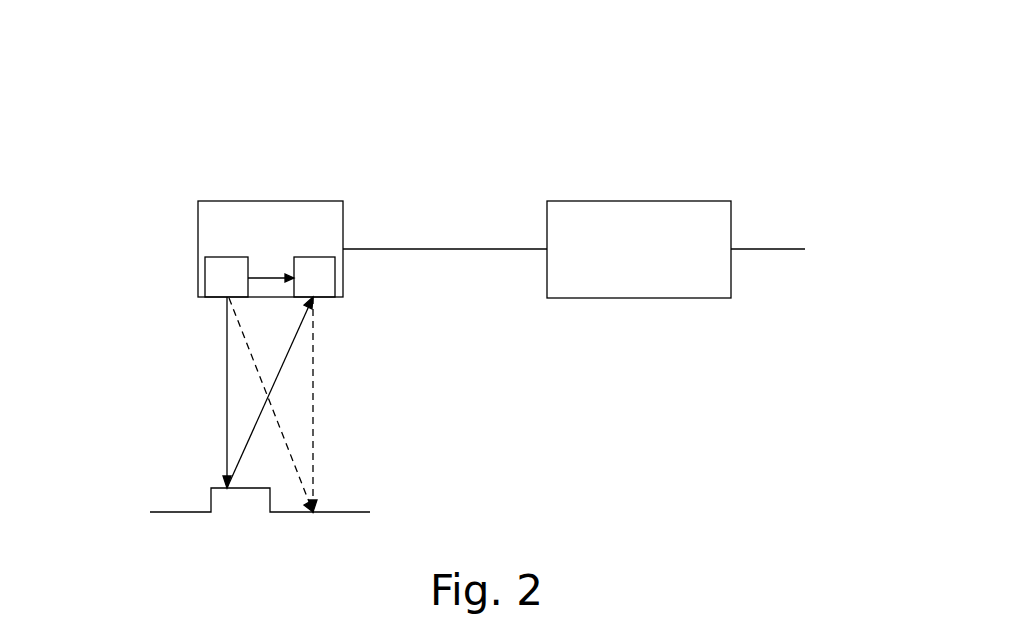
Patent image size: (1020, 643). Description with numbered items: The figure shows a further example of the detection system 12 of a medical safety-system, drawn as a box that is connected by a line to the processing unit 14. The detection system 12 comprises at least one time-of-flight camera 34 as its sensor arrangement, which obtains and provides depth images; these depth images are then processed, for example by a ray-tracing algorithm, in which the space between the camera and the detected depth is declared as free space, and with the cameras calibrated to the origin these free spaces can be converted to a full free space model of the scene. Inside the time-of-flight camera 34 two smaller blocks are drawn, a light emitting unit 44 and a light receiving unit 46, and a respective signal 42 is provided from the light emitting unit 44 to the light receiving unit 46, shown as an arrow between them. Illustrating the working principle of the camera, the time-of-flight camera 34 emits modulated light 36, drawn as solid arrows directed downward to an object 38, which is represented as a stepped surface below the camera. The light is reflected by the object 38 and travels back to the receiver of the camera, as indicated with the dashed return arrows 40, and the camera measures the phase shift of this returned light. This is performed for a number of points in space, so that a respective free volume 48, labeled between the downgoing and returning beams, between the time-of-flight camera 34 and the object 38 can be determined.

The detection system 12 is at (346, 118).
The processing unit 14 is at (641, 201).
The time-of-flight camera 34 is at (198, 249).
The modulated light 36 is at (227, 362).
The object 38 is at (180, 513).
The return arrows 40 is at (290, 350).
The signal 42 is at (258, 278).
The light emitting unit 44 is at (229, 257).
The light receiving unit 46 is at (327, 275).
The free volume 48 is at (288, 341).